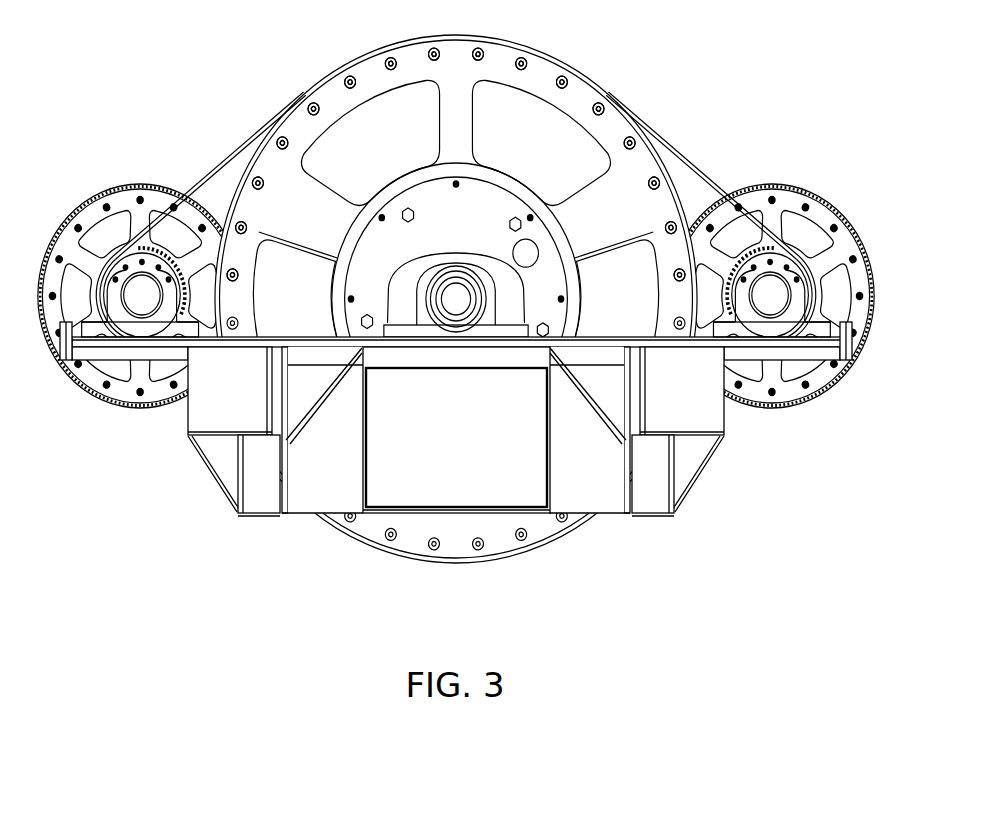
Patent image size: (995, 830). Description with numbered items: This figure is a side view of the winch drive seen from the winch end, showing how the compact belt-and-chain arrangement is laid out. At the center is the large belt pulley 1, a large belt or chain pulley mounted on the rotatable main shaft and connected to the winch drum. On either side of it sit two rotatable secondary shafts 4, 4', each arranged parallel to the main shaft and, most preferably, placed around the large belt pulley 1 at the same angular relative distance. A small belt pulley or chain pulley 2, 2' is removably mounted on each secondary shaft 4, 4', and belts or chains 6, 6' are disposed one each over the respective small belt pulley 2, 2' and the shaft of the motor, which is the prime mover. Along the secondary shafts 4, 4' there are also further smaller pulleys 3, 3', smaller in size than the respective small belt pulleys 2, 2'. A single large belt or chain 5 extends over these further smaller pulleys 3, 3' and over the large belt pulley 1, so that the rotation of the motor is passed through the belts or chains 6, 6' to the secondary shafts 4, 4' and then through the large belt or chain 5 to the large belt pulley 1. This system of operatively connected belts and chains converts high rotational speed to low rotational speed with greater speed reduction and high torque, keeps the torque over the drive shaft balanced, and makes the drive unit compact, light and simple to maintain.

The large belt pulley 1 is at (590, 95).
The small belt pulley 2 is at (140, 250).
The small belt pulley 2' is at (771, 341).
The further smaller pulley 3 is at (110, 250).
The further smaller pulley 3' is at (809, 248).
The secondary shaft 4 is at (140, 439).
The secondary shaft 4' is at (771, 439).
The large belt or chain 5 is at (660, 137).
The belt or chain 6 is at (201, 175).
The belt or chain 6' is at (779, 217).